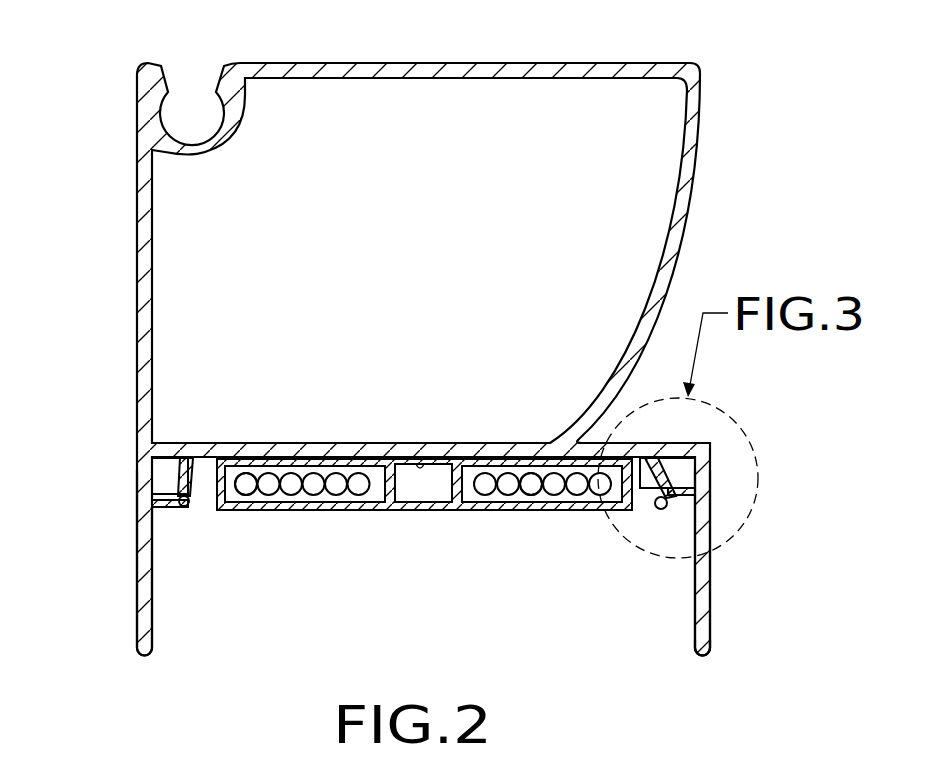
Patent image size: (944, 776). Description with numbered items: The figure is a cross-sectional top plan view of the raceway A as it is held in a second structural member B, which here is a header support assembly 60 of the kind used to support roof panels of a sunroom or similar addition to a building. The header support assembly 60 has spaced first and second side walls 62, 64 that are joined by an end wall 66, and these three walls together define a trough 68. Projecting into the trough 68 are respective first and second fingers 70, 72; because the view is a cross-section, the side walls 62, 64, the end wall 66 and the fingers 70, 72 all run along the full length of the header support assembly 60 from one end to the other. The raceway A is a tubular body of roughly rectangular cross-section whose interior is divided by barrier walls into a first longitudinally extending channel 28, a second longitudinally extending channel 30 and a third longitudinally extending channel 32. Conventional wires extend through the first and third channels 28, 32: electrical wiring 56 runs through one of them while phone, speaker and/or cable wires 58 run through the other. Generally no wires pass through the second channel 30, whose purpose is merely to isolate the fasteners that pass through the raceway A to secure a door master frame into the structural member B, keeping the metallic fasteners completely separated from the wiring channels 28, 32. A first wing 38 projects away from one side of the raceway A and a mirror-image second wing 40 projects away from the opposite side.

The second structural member B is at (423, 328).
The raceway A is at (438, 522).
The header support assembly 60 is at (570, 80).
The first side wall 62 is at (711, 588).
The second side wall 64 is at (140, 573).
The trough 68 is at (660, 640).
The end wall 66 is at (233, 455).
The third longitudinally extending channel 32 is at (296, 466).
The second longitudinally extending channel 30 is at (420, 467).
The first longitudinally extending channel 28 is at (506, 466).
The phone, speaker and/or cable wires 58 is at (247, 484).
The electrical wiring 56 is at (527, 485).
The second wing 40 is at (130, 513).
The first wing 38 is at (717, 527).
The second finger 72 is at (165, 507).
The first finger 70 is at (658, 516).